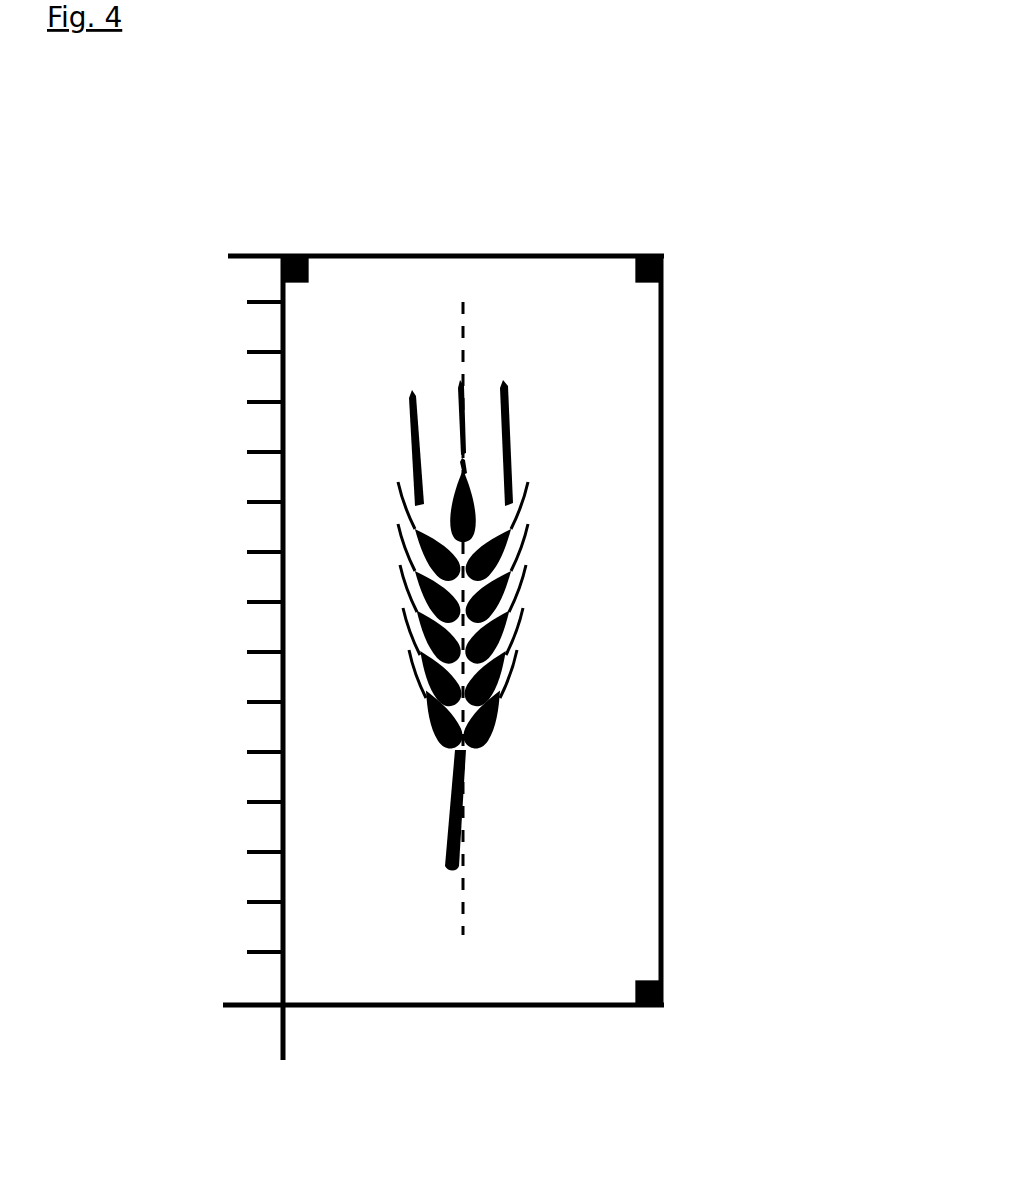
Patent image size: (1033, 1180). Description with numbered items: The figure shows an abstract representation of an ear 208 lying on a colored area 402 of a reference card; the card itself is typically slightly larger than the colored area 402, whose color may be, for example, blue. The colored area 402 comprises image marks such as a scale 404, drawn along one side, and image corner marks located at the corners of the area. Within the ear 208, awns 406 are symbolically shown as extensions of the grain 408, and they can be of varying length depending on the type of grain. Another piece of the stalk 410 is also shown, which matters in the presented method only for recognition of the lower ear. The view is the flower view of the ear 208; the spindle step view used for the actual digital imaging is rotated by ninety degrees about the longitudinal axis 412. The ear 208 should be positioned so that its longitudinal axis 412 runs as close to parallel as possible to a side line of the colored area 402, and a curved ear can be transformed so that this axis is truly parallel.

The colored area 402 is at (578, 280).
The scale 404 is at (210, 302).
The ear 208 is at (591, 541).
The awns 406 is at (533, 490).
The grain 408 is at (514, 737).
The stalk 410 is at (437, 832).
The longitudinal axis 412 is at (473, 903).